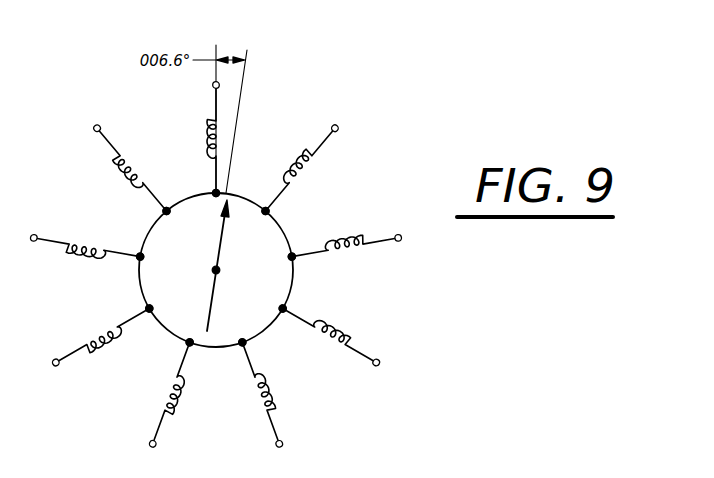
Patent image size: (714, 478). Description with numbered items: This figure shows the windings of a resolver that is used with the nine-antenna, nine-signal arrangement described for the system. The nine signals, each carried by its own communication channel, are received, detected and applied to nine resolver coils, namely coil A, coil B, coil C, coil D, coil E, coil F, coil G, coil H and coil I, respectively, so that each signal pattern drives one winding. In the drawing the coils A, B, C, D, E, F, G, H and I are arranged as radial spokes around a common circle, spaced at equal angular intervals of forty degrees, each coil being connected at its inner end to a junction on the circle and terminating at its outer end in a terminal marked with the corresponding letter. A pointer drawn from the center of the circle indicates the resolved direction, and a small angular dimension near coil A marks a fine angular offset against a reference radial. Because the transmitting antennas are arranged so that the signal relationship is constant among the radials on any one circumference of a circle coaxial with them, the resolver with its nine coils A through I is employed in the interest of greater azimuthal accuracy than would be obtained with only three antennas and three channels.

The resolver coil A is at (203, 136).
The resolver coil B is at (308, 160).
The resolver coil C is at (357, 242).
The resolver coil D is at (338, 336).
The resolver coil E is at (266, 401).
The resolver coil F is at (163, 400).
The resolver coil G is at (90, 338).
The resolver coil H is at (74, 243).
The resolver coil I is at (126, 156).